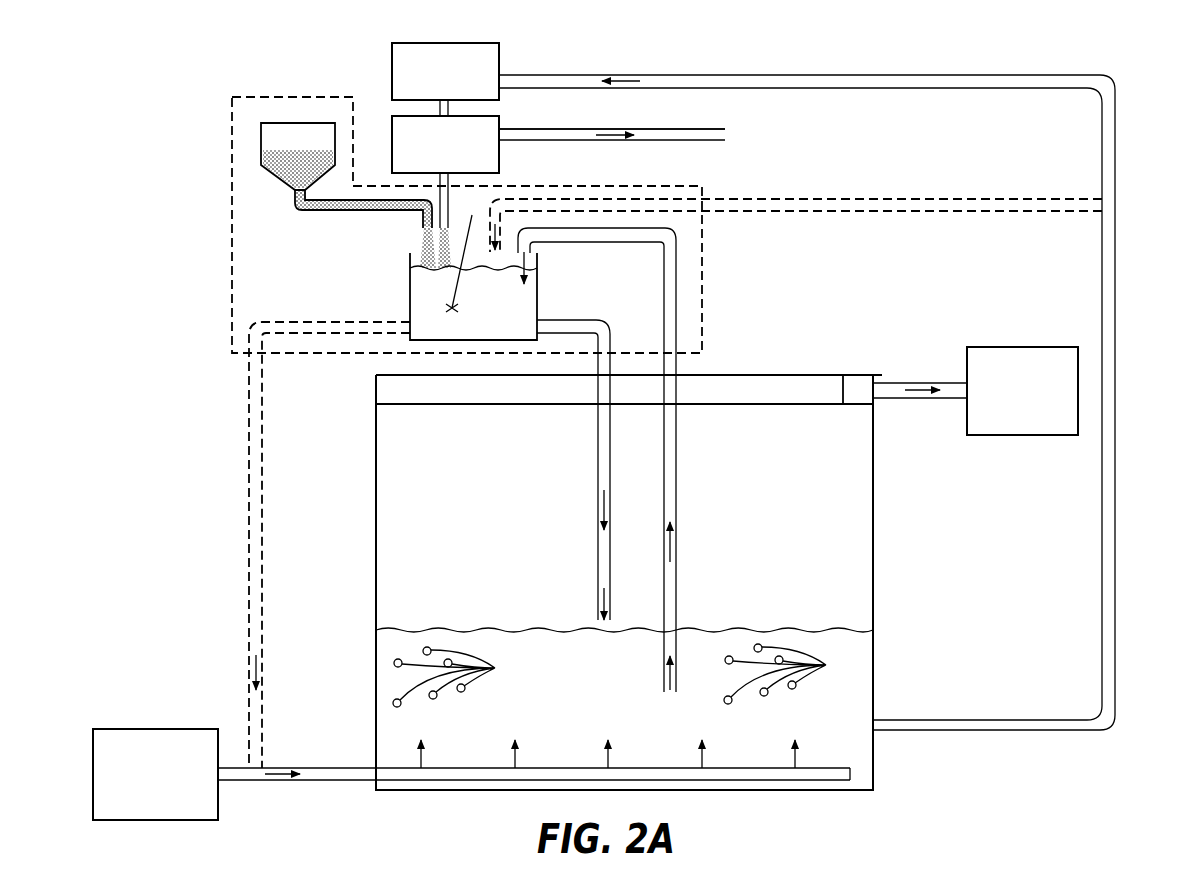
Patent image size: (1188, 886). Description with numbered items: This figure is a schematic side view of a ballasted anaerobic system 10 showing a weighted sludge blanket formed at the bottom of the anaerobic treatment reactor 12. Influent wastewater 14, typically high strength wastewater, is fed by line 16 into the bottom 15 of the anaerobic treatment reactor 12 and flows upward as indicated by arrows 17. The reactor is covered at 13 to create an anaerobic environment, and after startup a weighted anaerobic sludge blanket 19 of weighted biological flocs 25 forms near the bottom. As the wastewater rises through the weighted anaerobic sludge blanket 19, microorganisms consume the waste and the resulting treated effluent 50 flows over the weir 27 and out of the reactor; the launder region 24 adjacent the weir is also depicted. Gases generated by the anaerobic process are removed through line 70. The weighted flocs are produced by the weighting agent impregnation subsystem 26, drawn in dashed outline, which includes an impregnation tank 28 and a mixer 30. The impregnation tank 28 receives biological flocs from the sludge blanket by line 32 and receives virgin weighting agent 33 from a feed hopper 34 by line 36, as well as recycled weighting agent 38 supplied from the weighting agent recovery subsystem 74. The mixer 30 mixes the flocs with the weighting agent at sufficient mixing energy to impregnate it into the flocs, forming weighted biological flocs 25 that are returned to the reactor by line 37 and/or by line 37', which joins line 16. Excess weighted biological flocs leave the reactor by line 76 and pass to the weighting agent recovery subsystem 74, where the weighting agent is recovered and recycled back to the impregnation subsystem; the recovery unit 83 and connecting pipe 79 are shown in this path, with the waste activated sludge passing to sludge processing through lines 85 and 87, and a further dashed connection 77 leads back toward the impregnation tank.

The ballasted anaerobic system 10 is at (952, 56).
The anaerobic treatment reactor 12 is at (875, 578).
The cover 13 is at (735, 375).
The influent wastewater 14 is at (168, 811).
The bottom 15 is at (875, 776).
The line 16 is at (316, 768).
The arrows 17 is at (424, 761).
The weighted anaerobic sludge blanket 19 is at (802, 630).
The effluent launder 24 is at (735, 405).
The weighted biological flocs 25 is at (624, 675).
The weighting agent impregnation subsystem 26 is at (271, 307).
The weir 27 is at (853, 388).
The impregnation tank 28 is at (440, 337).
The mixer 30 is at (480, 301).
The line 32 is at (577, 243).
The virgin weighting agent 33 is at (290, 180).
The feed hopper 34 is at (334, 149).
The line 36 is at (323, 212).
The line 37 is at (586, 454).
The line 37' is at (329, 525).
The recycled weighting agent 38 is at (459, 200).
The treated effluent 50 is at (1035, 427).
The line 70 is at (457, 95).
The weighting agent recovery subsystem 74 is at (372, 98).
The line 76 is at (1045, 732).
The bypass pipe 77 is at (947, 212).
The separator to recovery pipe 79 is at (450, 106).
The ballast recovery unit 83 is at (457, 166).
The WAS discharge pipe 85 is at (604, 127).
The WAS discharge pipe lower line 87 is at (540, 140).